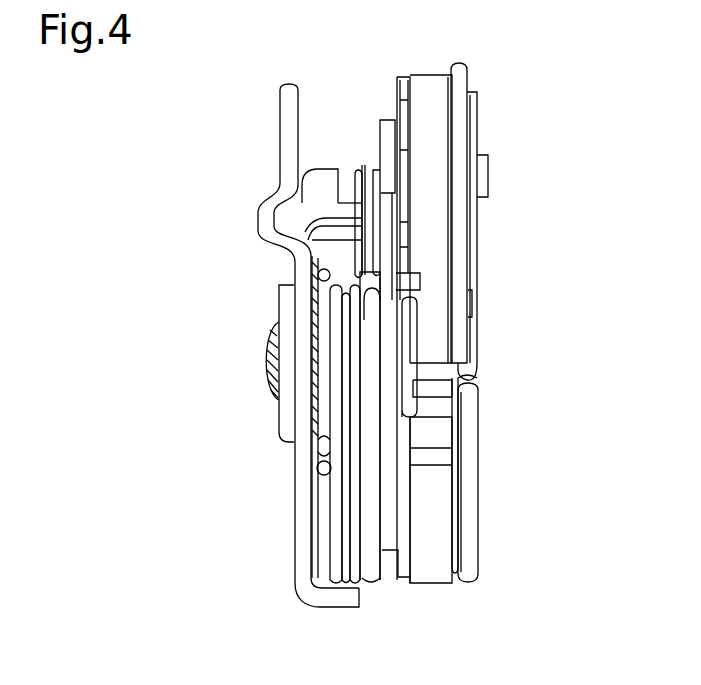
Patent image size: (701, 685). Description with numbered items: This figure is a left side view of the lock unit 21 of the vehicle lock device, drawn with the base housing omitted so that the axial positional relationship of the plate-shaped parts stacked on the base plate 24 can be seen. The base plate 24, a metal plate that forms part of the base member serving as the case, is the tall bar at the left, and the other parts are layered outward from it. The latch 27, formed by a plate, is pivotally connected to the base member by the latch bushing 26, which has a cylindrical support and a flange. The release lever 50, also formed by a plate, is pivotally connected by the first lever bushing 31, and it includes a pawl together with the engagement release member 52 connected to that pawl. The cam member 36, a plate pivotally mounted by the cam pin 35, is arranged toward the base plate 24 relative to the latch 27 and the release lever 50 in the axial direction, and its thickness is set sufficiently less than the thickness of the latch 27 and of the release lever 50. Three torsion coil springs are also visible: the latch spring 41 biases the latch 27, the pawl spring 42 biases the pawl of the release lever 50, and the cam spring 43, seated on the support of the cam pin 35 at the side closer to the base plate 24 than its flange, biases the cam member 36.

The lock unit 21 is at (597, 97).
The base plate 24 is at (282, 103).
The latch bushing 26 is at (481, 235).
The latch 27 is at (400, 81).
The first lever bushing 31 is at (479, 447).
The cam pin 35 is at (268, 354).
The cam member 36 is at (384, 118).
The latch spring 41 is at (358, 170).
The pawl spring 42 is at (369, 586).
The cam spring 43 is at (322, 309).
The release lever 50 is at (428, 74).
The engagement release member 52 is at (468, 69).